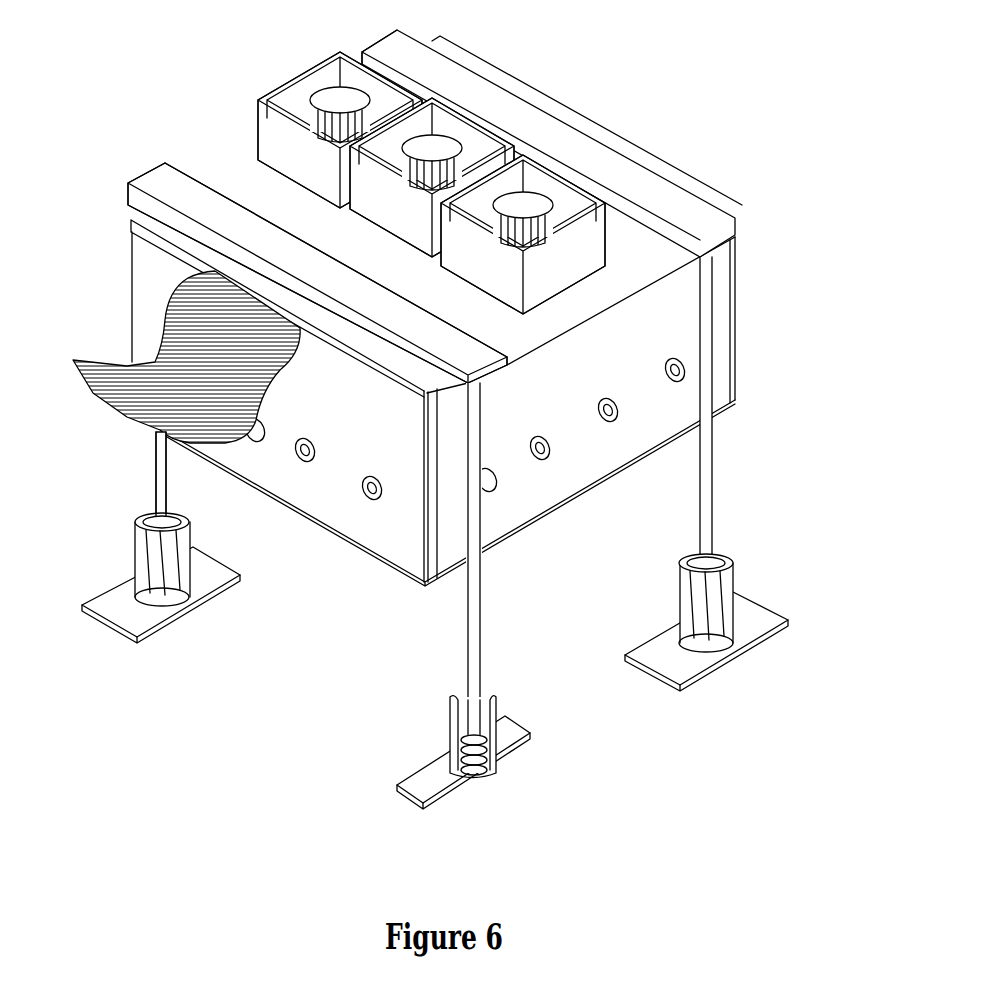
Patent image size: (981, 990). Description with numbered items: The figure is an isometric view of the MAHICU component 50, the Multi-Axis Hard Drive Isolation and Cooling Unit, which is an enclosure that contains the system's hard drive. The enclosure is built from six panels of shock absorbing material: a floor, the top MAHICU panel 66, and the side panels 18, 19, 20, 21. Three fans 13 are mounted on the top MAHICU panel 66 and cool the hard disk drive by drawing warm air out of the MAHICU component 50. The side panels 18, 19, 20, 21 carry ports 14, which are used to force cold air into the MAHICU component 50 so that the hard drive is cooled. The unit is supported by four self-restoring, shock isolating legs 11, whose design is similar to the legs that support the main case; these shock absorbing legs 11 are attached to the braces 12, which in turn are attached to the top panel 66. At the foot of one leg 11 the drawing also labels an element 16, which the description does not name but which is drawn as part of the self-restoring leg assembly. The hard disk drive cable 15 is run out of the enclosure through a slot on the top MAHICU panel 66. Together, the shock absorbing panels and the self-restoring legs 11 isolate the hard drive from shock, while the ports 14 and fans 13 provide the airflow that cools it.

The MAHICU component 50 is at (203, 67).
The fans 13 is at (323, 68).
The top MAHICU panel 66 is at (547, 107).
The side panel 20 is at (662, 156).
The side panel 21 is at (213, 163).
The braces 12 is at (128, 178).
The hard disk drive cable 15 is at (195, 272).
The side panel 18 is at (340, 395).
The ports 14 is at (316, 450).
The side panel 19 is at (623, 365).
The shock isolating legs 11 is at (152, 484).
The spring 16 is at (490, 773).